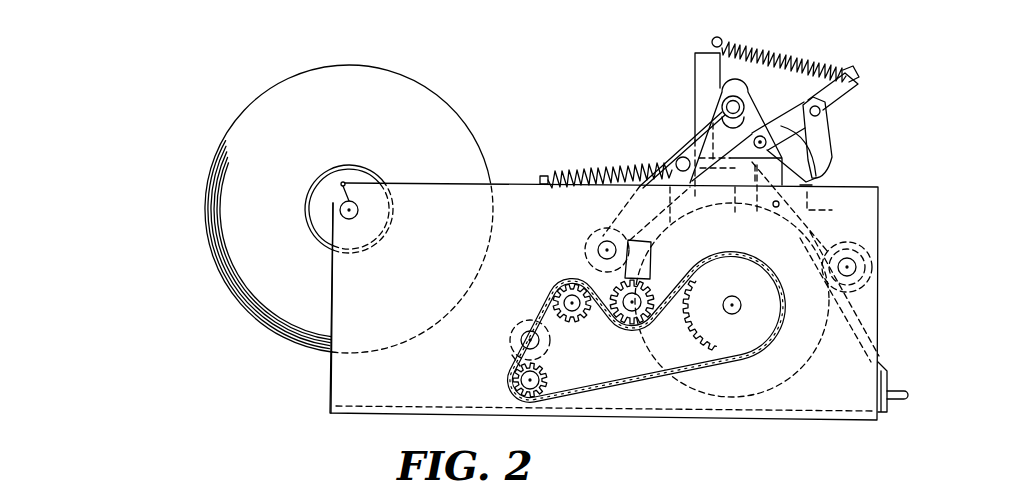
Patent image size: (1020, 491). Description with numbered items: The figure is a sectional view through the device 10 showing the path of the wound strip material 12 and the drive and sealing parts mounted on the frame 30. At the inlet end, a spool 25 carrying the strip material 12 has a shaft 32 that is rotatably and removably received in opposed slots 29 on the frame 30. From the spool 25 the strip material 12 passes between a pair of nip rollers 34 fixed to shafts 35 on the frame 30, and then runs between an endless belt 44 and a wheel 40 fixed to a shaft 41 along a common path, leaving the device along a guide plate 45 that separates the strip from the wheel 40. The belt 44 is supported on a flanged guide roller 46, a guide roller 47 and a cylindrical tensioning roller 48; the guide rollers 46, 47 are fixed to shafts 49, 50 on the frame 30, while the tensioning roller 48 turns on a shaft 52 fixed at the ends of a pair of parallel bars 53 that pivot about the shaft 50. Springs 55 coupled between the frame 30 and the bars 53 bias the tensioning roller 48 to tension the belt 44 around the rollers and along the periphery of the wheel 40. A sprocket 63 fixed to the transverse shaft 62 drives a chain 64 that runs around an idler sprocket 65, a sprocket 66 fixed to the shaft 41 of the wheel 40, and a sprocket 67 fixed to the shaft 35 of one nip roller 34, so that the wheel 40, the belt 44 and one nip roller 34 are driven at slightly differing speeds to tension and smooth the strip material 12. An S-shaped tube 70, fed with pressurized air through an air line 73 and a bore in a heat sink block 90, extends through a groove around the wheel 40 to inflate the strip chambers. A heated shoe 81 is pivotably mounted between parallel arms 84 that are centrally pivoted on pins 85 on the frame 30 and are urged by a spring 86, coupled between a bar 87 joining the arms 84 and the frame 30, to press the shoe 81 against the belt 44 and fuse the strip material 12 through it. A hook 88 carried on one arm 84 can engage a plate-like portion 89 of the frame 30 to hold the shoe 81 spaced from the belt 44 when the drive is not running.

The device 10 is at (884, 189).
The wound strip material 12 is at (416, 80).
The spool 25 is at (308, 192).
The slots 29 is at (345, 182).
The frame 30 is at (332, 380).
The shaft 32 is at (350, 219).
The nip rollers 34 is at (513, 363).
The shafts 35 is at (525, 330).
The wheel 40 is at (787, 392).
The shaft 41 is at (733, 296).
The endless belt 44 is at (763, 123).
The guide plate 45 is at (884, 370).
The flanged guide roller 46 is at (880, 252).
The guide roller 47 is at (596, 238).
The tensioning roller 48 is at (743, 92).
The shaft 49 is at (856, 267).
The shaft 50 is at (596, 248).
The shaft 52 is at (727, 104).
The parallel bars 53 is at (692, 130).
The springs 55 is at (633, 163).
The shaft 62 is at (572, 296).
The sprocket 63 is at (575, 322).
The chain 64 is at (637, 374).
The idler sprocket 65 is at (634, 328).
The sprocket 66 is at (768, 329).
The sprocket 67 is at (541, 375).
The S-shaped tube 70 is at (906, 393).
The air line 73 is at (779, 206).
The heated shoe 81 is at (667, 220).
The parallel arms 84 is at (826, 168).
The pins 85 is at (763, 137).
The spring 86 is at (789, 54).
The bar 87 is at (860, 95).
The hook 88 is at (829, 141).
The plate-like portion 89 is at (806, 182).
The heat sink block 90 is at (828, 203).